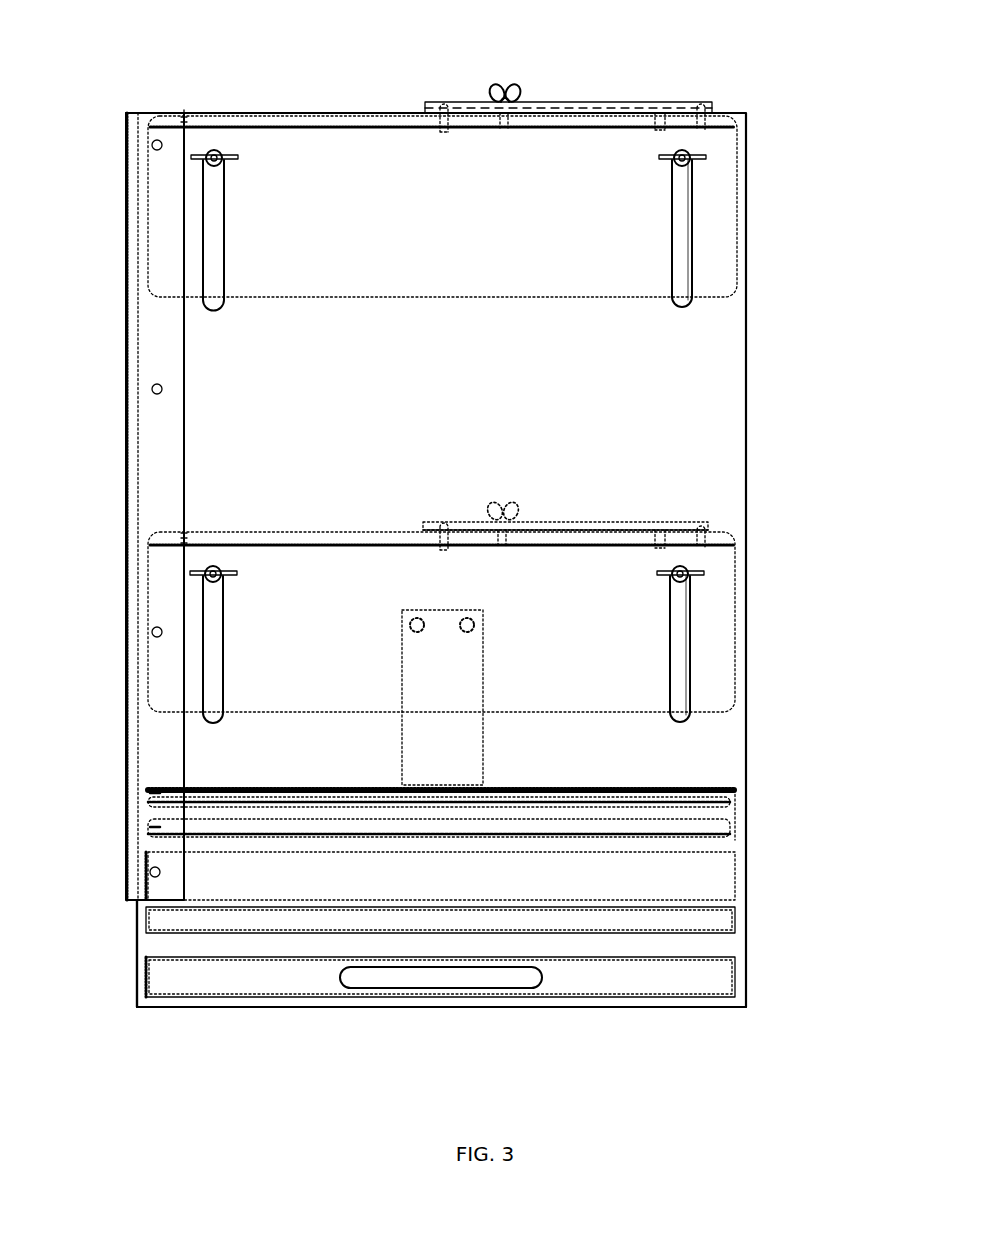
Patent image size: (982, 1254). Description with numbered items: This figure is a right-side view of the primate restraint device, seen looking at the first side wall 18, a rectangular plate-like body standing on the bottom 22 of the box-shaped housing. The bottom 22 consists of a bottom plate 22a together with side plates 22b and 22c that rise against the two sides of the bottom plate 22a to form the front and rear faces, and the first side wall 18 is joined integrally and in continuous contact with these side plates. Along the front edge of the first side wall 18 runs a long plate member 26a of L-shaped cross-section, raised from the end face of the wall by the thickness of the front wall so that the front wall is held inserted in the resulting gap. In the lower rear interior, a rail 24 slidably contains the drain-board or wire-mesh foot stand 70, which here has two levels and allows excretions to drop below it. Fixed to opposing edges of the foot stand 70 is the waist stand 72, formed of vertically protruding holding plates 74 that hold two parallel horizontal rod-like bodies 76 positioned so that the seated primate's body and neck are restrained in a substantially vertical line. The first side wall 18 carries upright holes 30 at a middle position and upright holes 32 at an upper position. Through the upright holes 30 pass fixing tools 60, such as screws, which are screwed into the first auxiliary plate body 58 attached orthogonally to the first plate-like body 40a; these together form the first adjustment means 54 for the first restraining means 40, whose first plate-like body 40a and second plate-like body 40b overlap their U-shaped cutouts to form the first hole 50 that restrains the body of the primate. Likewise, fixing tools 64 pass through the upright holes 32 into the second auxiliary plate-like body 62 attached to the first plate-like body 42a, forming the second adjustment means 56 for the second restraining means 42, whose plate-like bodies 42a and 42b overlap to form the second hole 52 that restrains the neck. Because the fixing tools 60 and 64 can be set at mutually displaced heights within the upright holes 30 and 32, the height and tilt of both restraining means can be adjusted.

The first side wall 18 is at (718, 752).
The bottom 22 is at (60, 975).
The bottom plate 22a is at (282, 997).
The side plate 22b is at (137, 943).
The side plate 22c is at (740, 970).
The rail 24 is at (740, 808).
The long plate member 26a is at (168, 135).
The upright hole 30 is at (677, 633).
The upright hole 32 is at (679, 219).
The first restraining means 40 is at (629, 489).
The first plate-like body 40a is at (645, 522).
The second plate-like body 40b is at (583, 522).
The second restraining means 42 is at (568, 71).
The first plate-like body 42a is at (659, 87).
The second plate-like body 42b is at (565, 106).
The first hole 50 is at (463, 522).
The second hole 52 is at (463, 113).
The first adjustment means 54 is at (742, 644).
The second adjustment means 56 is at (743, 228).
The first auxiliary plate body 58 is at (680, 678).
The fixing tool 60 is at (704, 573).
The second auxiliary plate-like body 62 is at (682, 260).
The fixing tool 64 is at (705, 157).
The foot stand 70 is at (153, 793).
The waist stand 72 is at (261, 697).
The holding plate 74 is at (437, 752).
The rod-like body 76 is at (400, 613).